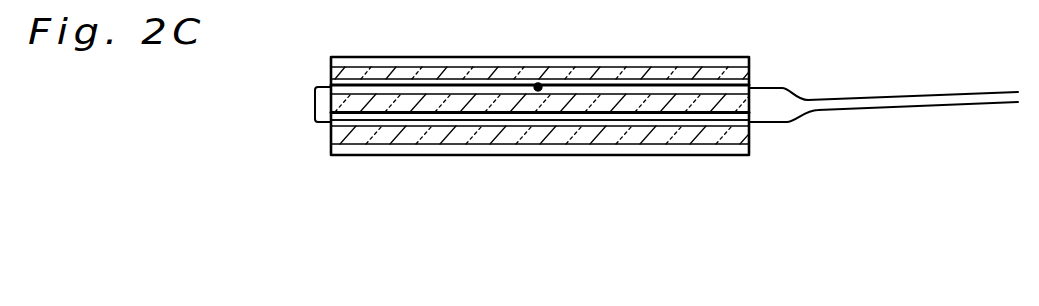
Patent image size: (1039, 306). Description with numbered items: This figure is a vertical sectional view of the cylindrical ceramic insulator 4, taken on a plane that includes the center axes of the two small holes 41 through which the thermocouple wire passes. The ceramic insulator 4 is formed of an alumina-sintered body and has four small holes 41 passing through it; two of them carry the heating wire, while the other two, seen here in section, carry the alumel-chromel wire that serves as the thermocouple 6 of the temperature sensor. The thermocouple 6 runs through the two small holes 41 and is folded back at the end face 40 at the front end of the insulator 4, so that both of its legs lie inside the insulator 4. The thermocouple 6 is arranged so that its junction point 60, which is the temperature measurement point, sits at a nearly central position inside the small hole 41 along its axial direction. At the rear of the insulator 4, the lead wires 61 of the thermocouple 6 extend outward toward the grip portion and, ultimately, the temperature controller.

The ceramic insulator 4 is at (738, 56).
The small holes 41 is at (406, 82).
The thermocouple 6 is at (315, 94).
The junction point 60 is at (538, 87).
The lead wires 61 is at (923, 93).
The end face 40 is at (329, 134).